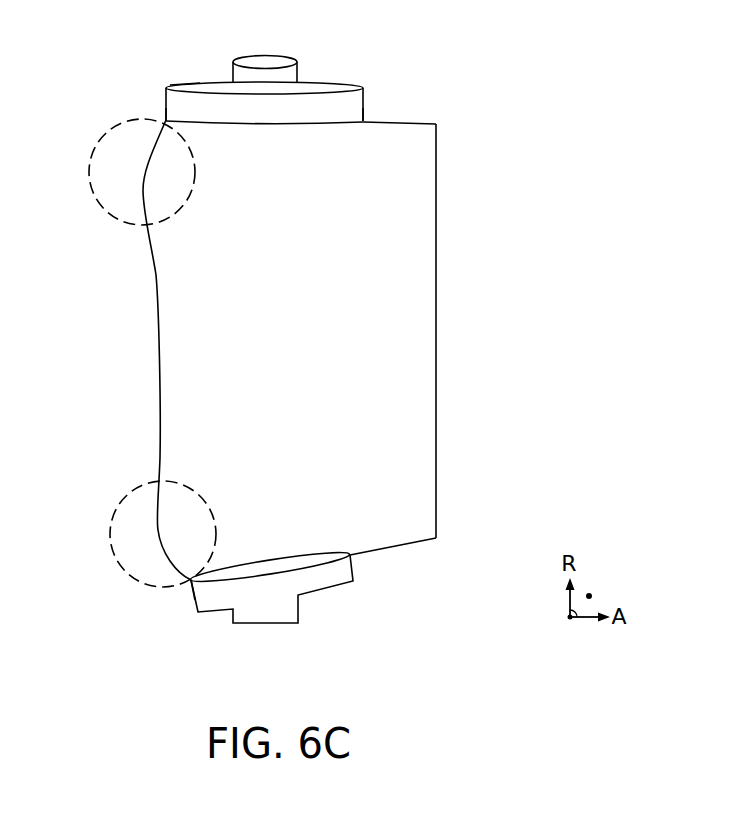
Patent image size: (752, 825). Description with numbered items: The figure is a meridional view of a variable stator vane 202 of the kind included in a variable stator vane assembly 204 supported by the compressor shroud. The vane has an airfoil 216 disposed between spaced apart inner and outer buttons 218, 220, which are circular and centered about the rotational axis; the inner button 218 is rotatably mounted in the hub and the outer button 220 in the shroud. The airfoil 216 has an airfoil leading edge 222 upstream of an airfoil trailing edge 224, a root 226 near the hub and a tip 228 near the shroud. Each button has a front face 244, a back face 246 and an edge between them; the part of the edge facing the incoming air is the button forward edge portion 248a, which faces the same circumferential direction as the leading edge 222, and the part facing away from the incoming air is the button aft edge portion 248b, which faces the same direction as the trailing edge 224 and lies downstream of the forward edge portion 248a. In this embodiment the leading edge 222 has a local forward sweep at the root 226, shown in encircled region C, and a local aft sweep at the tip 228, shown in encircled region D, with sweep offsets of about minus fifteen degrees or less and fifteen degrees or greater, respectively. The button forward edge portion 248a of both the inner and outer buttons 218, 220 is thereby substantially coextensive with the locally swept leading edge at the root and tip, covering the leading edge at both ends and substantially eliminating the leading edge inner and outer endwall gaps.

The variable stator vane 202 is at (479, 194).
The variable stator vane assembly 204 is at (546, 105).
The airfoil 216 is at (268, 354).
The inner button 218 is at (322, 583).
The outer button 220 is at (323, 76).
The airfoil leading edge 222 is at (152, 267).
The airfoil trailing edge 224 is at (428, 260).
The root 226 is at (408, 537).
The tip 228 is at (398, 118).
The front face 244 is at (317, 116).
The back face 246 is at (198, 76).
The button forward edge portion 248a is at (158, 93).
The button aft edge portion 248b is at (355, 94).
The encircled region C is at (101, 528).
The encircled region D is at (81, 165).